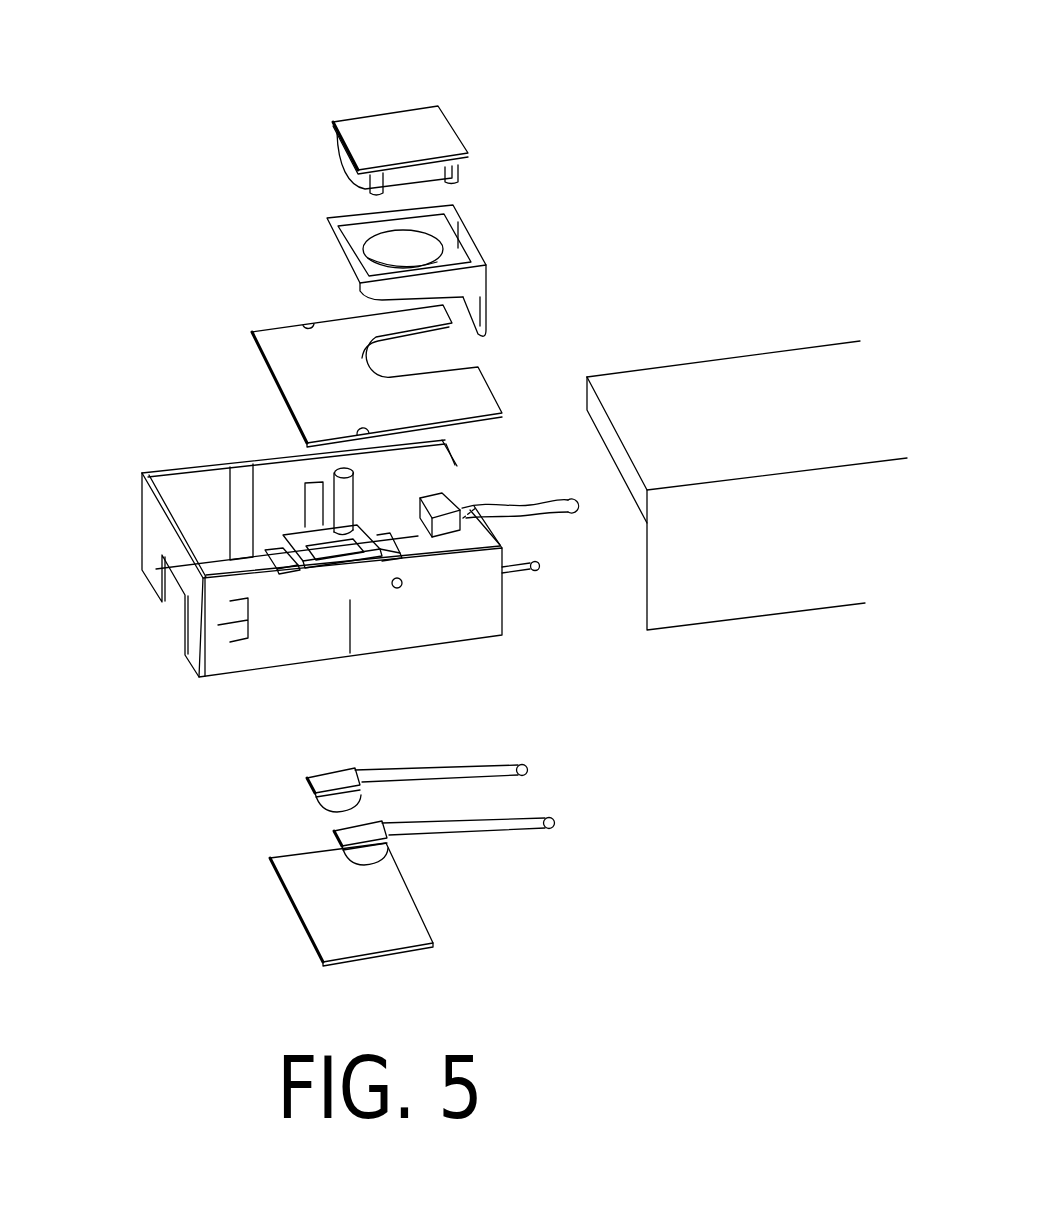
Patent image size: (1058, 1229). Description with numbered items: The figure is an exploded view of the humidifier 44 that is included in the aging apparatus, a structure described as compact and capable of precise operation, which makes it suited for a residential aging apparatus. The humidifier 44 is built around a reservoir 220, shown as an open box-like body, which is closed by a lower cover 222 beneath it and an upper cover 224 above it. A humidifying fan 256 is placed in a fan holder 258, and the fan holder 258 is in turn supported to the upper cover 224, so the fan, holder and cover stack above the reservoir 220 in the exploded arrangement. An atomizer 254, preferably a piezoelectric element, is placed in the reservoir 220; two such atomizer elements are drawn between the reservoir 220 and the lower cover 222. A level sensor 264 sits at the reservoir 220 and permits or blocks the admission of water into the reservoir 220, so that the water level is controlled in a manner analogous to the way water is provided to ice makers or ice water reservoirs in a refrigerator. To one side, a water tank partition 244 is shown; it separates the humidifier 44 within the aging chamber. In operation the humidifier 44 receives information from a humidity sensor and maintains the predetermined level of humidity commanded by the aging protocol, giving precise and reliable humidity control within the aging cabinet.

The humidifier 44 is at (528, 122).
The humidifying fan 256 is at (436, 122).
The fan holder 258 is at (468, 256).
The upper cover 224 is at (470, 401).
The reservoir 220 is at (188, 490).
The level sensor 264 is at (450, 502).
The water tank partition 244 is at (727, 392).
The atomizer 254 is at (274, 806).
The lower cover 222 is at (387, 927).